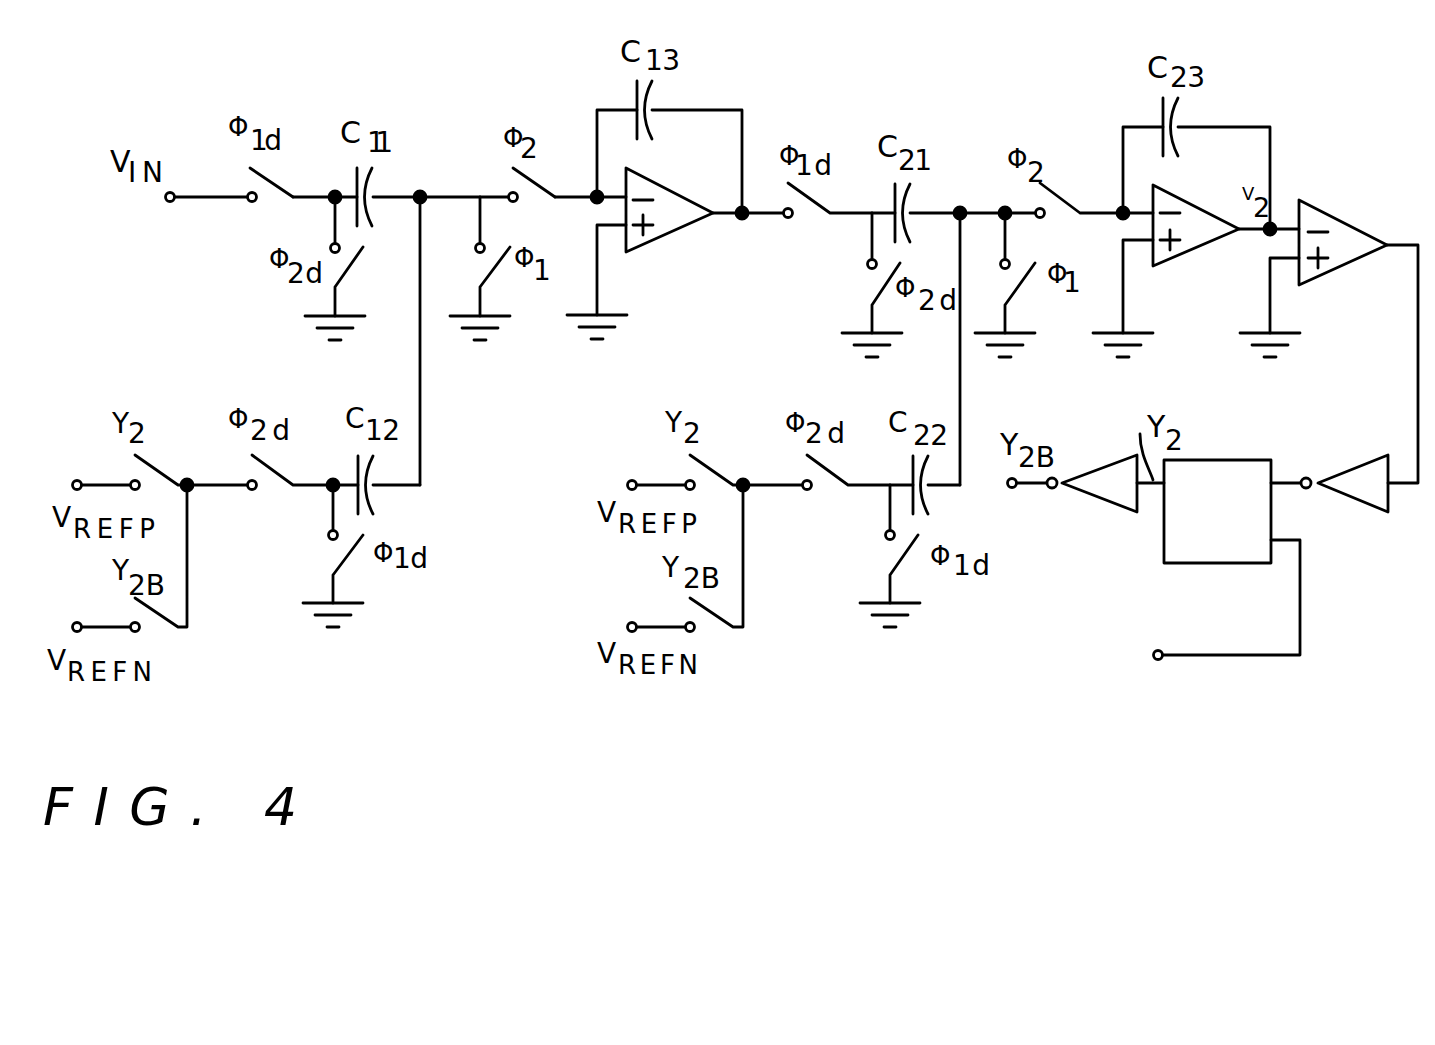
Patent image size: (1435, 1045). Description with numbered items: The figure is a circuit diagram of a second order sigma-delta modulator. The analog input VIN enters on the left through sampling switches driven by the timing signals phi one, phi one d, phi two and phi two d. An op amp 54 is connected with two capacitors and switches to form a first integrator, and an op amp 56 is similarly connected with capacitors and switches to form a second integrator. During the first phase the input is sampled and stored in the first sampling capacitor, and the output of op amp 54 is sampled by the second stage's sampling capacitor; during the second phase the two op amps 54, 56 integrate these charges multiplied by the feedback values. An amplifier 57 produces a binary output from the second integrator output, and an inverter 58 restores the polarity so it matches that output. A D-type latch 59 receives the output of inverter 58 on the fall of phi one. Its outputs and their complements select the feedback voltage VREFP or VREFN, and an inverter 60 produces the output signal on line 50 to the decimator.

The input to the decimator 50 is at (1025, 487).
The op amp 54 is at (665, 225).
The op amp 56 is at (1182, 248).
The amplifier 57 is at (1327, 262).
The inverter 58 is at (1340, 478).
The D-type latch 59 is at (1210, 467).
The inverter 60 is at (1105, 495).